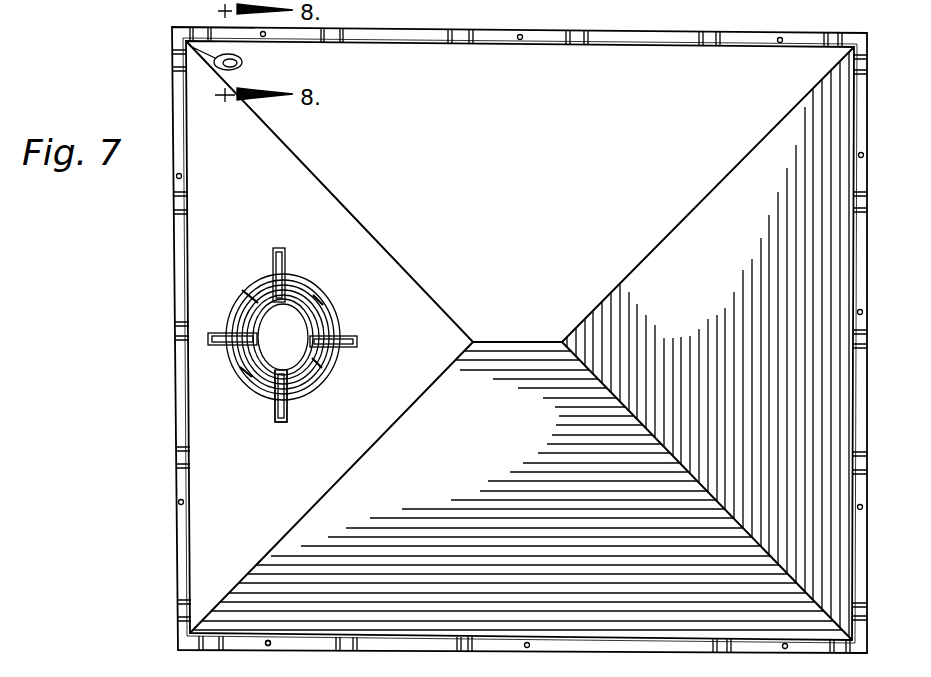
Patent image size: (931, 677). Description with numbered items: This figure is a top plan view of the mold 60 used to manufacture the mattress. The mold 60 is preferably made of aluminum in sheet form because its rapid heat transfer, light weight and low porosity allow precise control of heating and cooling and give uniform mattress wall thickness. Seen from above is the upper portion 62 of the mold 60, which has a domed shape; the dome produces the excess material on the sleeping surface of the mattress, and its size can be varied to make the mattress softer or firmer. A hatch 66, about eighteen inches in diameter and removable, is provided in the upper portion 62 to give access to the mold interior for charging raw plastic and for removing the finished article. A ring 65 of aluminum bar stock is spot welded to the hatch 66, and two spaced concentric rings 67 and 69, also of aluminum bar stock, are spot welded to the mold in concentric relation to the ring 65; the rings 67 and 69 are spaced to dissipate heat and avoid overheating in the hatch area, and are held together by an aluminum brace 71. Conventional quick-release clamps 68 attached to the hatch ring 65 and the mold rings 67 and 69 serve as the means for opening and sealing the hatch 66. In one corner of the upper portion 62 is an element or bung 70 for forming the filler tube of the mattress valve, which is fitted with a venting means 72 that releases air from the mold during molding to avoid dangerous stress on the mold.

The mold 60 is at (155, 352).
The upper portion 62 is at (200, 226).
The ring 65 is at (310, 374).
The hatch 66 is at (288, 322).
The concentric ring 67 is at (280, 414).
The clamps 68 is at (285, 252).
The concentric ring 69 is at (250, 378).
The element or bung 70 is at (188, 46).
The brace 71 is at (255, 285).
The venting means 72 is at (248, 659).